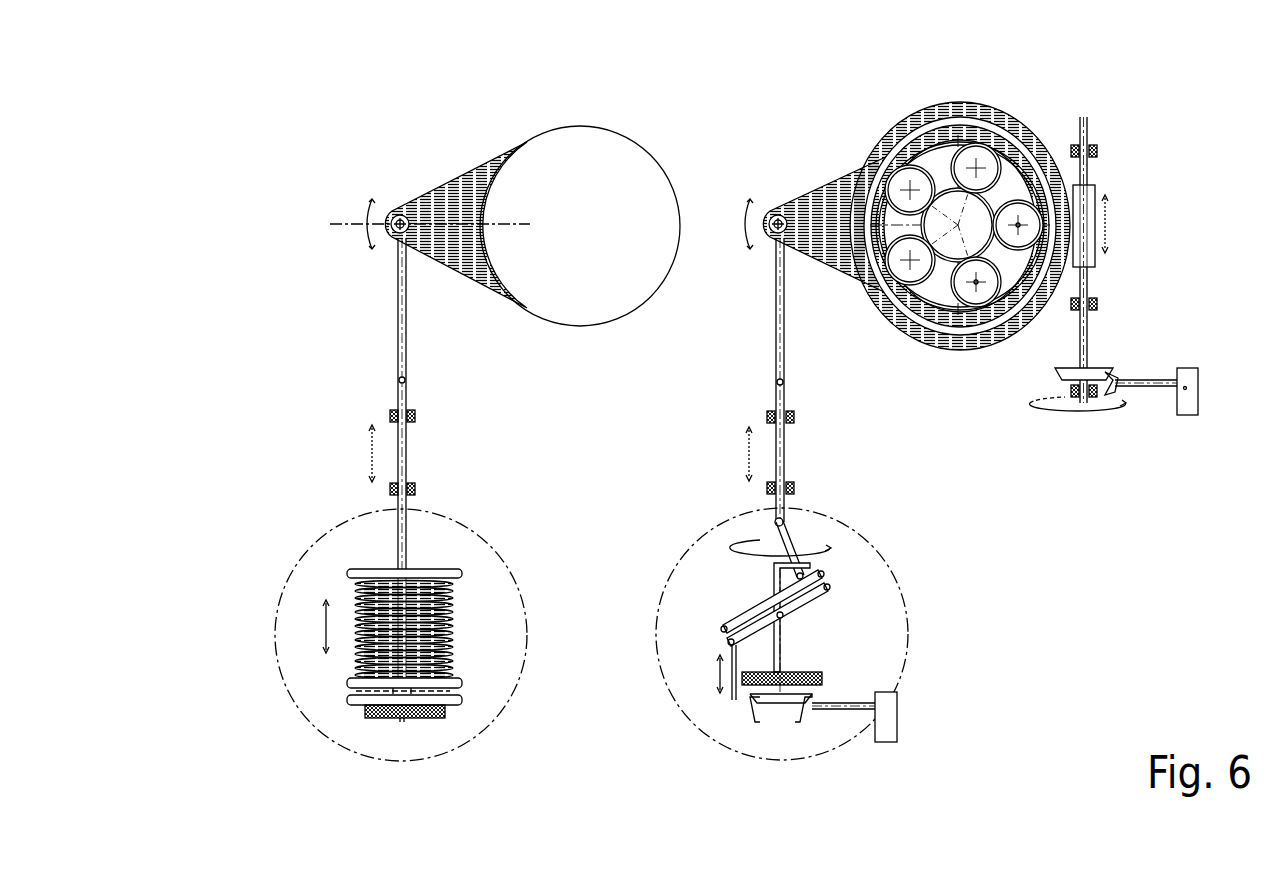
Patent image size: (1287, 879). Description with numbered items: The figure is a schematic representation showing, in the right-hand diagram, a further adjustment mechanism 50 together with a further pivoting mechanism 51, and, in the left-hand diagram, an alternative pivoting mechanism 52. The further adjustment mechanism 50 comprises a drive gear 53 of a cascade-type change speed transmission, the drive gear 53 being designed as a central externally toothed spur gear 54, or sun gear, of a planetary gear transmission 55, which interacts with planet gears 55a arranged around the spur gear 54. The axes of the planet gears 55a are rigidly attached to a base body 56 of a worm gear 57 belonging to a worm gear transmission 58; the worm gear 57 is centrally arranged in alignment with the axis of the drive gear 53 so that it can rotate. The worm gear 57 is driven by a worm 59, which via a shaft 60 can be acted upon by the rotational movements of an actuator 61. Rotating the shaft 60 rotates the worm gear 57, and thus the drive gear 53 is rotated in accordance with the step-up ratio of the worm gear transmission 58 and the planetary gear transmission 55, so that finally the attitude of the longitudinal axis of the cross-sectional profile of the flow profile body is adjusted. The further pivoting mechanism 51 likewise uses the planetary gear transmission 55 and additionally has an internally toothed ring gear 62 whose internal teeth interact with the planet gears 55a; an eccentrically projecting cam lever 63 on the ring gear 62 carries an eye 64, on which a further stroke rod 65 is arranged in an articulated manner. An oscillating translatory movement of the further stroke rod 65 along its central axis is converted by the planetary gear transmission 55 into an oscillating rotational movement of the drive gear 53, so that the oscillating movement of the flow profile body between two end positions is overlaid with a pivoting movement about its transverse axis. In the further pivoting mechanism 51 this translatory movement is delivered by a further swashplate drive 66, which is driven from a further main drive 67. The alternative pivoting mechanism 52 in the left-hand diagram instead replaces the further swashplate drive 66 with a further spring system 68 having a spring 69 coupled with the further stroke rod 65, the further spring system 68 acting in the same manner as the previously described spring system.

The further adjustment mechanism 50 is at (1128, 122).
The further pivoting mechanism 51 is at (763, 318).
The alternative pivoting mechanism 52 is at (360, 480).
The drive gear 53 is at (882, 136).
The spur gear 54 is at (950, 272).
The planetary gear transmission 55 is at (895, 327).
The planet gears 55a is at (992, 305).
The base body 56 is at (1003, 112).
The worm gear 57 is at (928, 110).
The worm gear transmission 58 is at (1135, 232).
The worm 59 is at (1092, 192).
The shaft 60 is at (1088, 318).
The actuator 61 is at (1186, 390).
The internally toothed ring gear 62 is at (950, 133).
The cam lever 63 is at (430, 187).
The eye 64 is at (392, 205).
The further stroke rod 65 is at (403, 350).
The further swashplate drive 66 is at (815, 522).
The further main drive 67 is at (880, 712).
The further spring system 68 is at (456, 683).
The spring 69 is at (452, 617).